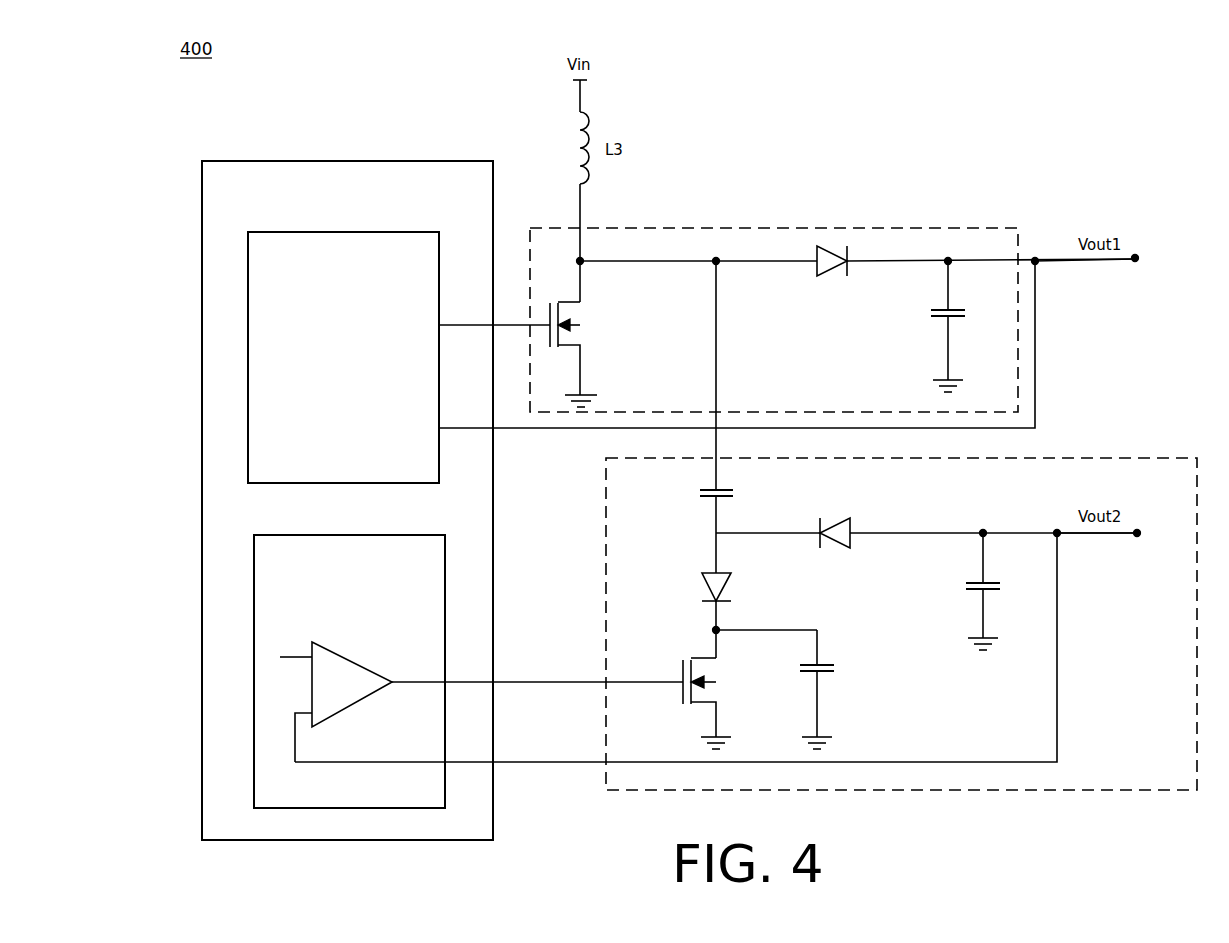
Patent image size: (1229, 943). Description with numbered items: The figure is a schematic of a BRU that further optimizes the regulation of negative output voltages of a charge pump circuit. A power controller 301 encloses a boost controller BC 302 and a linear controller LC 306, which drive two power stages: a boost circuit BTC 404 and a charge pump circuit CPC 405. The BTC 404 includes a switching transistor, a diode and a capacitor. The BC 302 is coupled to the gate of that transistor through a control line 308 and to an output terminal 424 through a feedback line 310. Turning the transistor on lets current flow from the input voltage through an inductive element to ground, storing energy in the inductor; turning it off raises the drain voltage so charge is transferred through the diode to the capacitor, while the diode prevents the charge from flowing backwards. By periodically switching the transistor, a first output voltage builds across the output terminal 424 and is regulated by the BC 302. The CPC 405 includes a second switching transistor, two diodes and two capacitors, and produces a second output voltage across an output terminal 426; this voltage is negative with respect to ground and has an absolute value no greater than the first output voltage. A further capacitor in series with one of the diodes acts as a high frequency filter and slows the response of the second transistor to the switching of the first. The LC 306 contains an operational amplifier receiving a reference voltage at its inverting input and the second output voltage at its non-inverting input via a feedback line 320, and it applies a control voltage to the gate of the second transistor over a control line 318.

The power controller 301 is at (284, 158).
The BC 302 is at (283, 232).
The LC 306 is at (285, 535).
The control line 308 is at (472, 331).
The feedback line 310 is at (472, 433).
The control line 318 is at (470, 680).
The feedback line 320 is at (470, 766).
The boost circuit (BTC) 404 is at (746, 228).
The charge pump circuit (CPC) 405 is at (1090, 458).
The output terminal 424 is at (1064, 270).
The output terminal 426 is at (1081, 544).